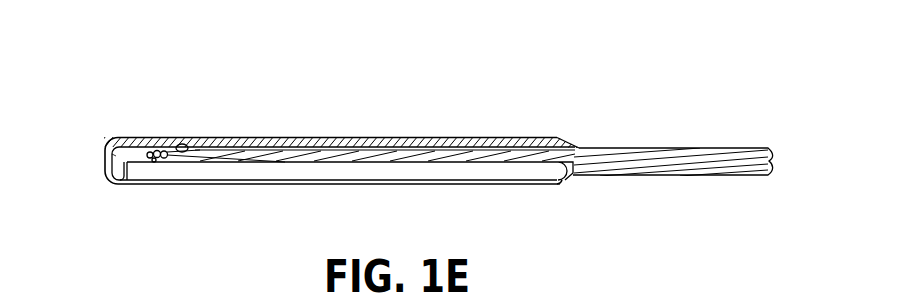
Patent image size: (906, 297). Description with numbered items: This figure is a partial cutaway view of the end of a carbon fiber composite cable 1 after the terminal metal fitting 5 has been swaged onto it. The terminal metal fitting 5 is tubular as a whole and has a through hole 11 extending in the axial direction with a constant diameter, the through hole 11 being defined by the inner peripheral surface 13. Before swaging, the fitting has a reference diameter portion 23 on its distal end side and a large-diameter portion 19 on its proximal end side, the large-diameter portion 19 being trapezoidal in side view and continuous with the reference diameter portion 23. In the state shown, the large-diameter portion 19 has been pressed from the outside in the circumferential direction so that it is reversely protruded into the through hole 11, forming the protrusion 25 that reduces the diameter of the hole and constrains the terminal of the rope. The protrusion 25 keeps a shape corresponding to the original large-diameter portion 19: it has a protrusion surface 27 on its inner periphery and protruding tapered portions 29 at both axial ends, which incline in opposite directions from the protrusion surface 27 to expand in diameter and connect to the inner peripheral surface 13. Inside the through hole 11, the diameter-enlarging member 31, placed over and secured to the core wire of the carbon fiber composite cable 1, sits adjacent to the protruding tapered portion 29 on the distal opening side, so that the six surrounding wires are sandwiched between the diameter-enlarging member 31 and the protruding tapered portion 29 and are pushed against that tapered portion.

The carbon fiber composite cable 1 is at (676, 157).
The terminal metal fitting 5 is at (347, 134).
The through hole 11 is at (118, 155).
The inner peripheral surface 13 is at (118, 170).
The large-diameter portion 19 is at (480, 137).
The reference diameter portion 23 is at (141, 148).
The protrusion 25 is at (375, 137).
The protrusion surface 27 is at (428, 137).
The protruding tapered portion 29 is at (181, 150).
The diameter-enlarging member 31 is at (137, 163).